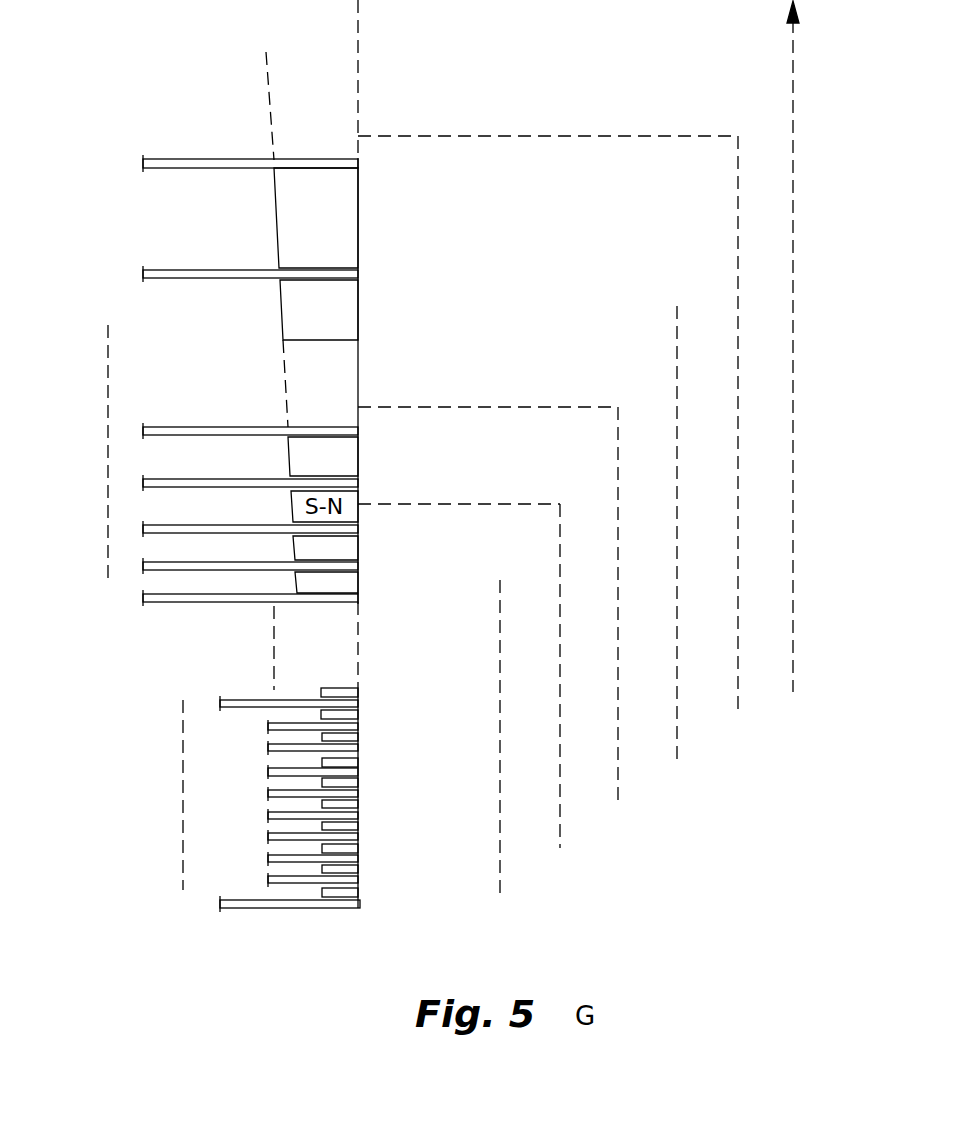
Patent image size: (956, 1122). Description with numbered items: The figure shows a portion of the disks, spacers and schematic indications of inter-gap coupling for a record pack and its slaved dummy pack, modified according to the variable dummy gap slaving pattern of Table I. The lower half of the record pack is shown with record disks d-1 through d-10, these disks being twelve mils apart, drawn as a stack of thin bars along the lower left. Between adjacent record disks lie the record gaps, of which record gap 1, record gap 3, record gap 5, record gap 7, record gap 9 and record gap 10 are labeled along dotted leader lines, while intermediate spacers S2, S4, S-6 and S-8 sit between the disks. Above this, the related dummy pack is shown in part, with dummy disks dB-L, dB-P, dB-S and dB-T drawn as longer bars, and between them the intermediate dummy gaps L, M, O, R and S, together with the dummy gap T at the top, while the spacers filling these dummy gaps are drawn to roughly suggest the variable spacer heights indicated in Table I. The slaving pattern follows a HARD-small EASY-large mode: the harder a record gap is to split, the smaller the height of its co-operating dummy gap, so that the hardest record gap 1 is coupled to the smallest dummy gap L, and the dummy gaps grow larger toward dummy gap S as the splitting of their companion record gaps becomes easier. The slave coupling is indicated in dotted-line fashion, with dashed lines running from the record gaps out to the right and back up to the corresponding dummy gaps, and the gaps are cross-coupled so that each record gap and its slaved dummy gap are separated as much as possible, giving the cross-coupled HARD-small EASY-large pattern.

The dummy gap T is at (272, 228).
The dummy disk dB-T is at (160, 172).
The dummy disk dB-S is at (160, 281).
The dummy disk dB-P is at (150, 426).
The dummy disk dB-L is at (152, 603).
The dummy gap S is at (360, 226).
The dummy gap R is at (677, 306).
The dummy gap O is at (360, 462).
The dummy gap M is at (360, 551).
The dummy gap L is at (500, 580).
The disk d-10 is at (233, 700).
The disk d-1 is at (228, 909).
The dummy spacer S-8 is at (322, 737).
The dummy spacer S-6 is at (322, 782).
The dummy spacer S4 is at (322, 826).
The dummy spacer S2 is at (322, 869).
The record gap 10 is at (793, 692).
The record gap 9 is at (738, 713).
The record gap 7 is at (677, 759).
The record gap 5 is at (618, 803).
The record gap 3 is at (560, 848).
The record gap 1 is at (500, 893).